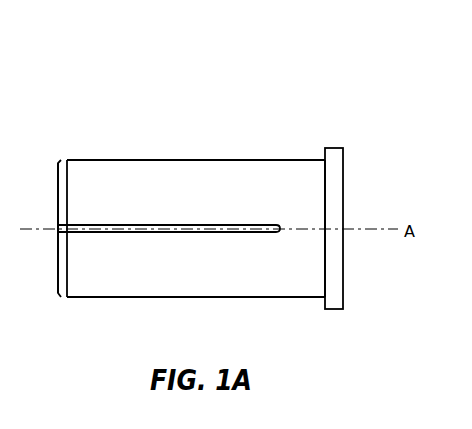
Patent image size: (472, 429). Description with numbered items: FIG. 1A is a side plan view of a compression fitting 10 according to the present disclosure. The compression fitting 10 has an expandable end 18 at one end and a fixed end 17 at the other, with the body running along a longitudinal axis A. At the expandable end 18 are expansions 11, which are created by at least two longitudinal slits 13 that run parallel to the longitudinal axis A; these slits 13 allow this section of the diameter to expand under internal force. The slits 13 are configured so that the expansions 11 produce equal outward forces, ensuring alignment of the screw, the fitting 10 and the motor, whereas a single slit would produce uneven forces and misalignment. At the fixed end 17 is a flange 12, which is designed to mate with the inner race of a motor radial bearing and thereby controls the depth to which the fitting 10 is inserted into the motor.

The compression fitting 10 is at (291, 63).
The expansions 11 is at (152, 182).
The flange 12 is at (329, 310).
The longitudinal slits 13 is at (108, 223).
The fixed end 17 is at (309, 125).
The expandable end 18 is at (93, 127).